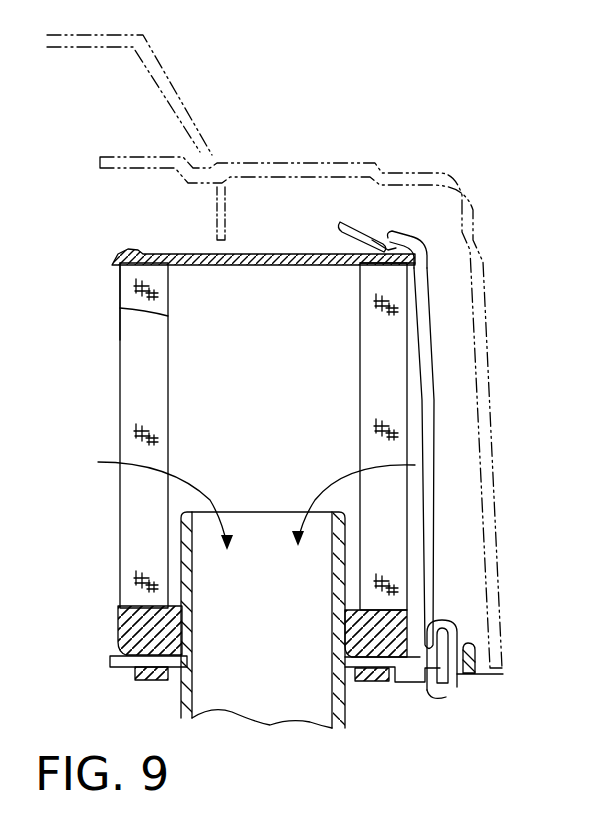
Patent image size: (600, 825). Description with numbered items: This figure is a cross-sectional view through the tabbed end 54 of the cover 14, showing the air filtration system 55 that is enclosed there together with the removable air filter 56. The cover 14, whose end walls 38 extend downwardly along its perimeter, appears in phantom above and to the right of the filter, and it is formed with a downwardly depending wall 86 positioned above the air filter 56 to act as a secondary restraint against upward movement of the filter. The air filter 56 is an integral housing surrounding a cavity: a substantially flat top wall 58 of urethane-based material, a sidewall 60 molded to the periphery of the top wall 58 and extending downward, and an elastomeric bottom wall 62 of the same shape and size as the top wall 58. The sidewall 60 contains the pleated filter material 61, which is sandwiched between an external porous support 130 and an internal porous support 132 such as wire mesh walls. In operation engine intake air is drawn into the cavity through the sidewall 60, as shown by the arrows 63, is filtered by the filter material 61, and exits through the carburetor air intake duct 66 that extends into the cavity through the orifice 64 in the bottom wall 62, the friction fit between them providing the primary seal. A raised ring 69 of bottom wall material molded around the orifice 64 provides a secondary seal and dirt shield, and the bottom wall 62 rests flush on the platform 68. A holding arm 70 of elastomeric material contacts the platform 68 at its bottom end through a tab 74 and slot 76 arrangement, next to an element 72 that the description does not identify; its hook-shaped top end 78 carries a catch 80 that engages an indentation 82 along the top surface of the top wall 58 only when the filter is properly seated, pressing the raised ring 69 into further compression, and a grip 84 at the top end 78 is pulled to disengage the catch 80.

The cover 14 is at (182, 94).
The end walls 38 is at (492, 457).
The tabbed end 54 is at (466, 191).
The air filtration system 55 is at (483, 78).
The air filter 56 is at (250, 410).
The top wall 58 is at (113, 262).
The sidewall 60 is at (110, 459).
The filter material 61 is at (128, 530).
The bottom wall 62 is at (124, 628).
The arrows 63 is at (310, 488).
The orifice 64 is at (361, 662).
The carburetor air intake duct 66 is at (183, 696).
The platform 68 is at (115, 660).
The raised ring 69 is at (145, 681).
The holding arm 70 is at (454, 425).
The clip 72 is at (437, 628).
The tab 74 is at (470, 673).
The slot 76 is at (443, 686).
The top end 78 is at (404, 242).
The catch 80 is at (386, 246).
The indentation 82 is at (386, 254).
The grip 84 is at (342, 224).
The downwardly depending wall 86 is at (213, 218).
The external porous support 130 is at (120, 332).
The internal porous support 132 is at (120, 308).